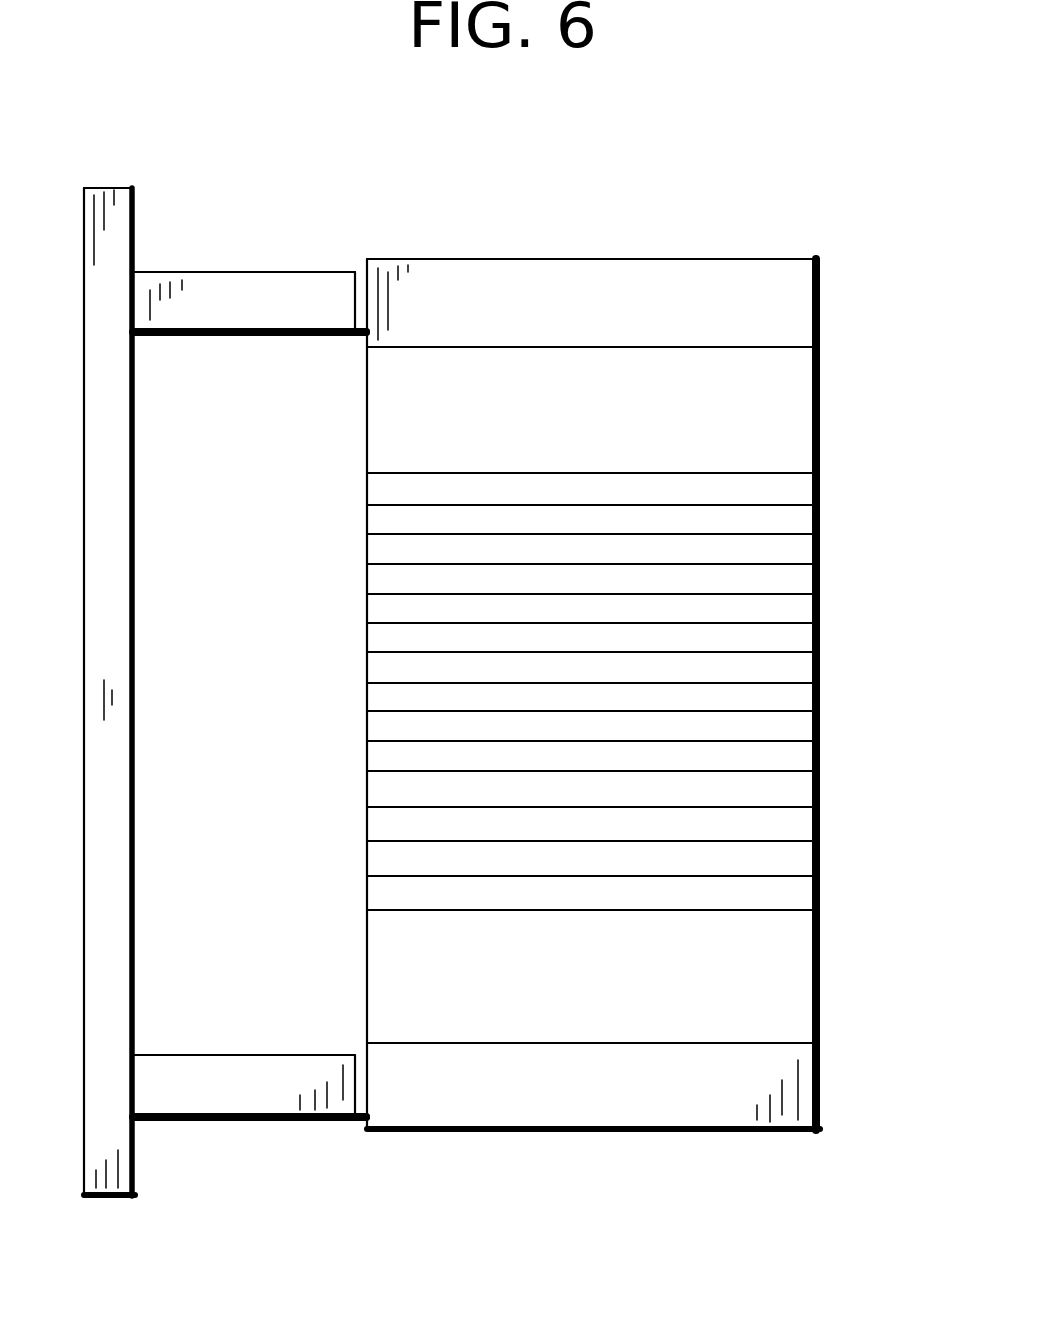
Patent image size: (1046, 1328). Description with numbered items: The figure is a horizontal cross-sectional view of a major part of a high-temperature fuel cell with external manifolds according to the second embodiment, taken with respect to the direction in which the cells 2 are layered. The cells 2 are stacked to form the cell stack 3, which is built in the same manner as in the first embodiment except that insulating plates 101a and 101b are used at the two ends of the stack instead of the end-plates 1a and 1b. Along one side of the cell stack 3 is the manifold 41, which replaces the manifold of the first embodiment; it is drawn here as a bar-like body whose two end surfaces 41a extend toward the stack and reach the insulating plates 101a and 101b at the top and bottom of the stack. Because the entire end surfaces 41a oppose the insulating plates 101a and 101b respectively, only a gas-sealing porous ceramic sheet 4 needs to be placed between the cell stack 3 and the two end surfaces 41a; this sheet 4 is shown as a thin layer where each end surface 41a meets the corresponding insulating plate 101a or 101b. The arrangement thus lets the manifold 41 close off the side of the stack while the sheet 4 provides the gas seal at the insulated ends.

The end-plate 1a is at (591, 437).
The end-plate 1b is at (594, 975).
The cells 2 is at (800, 521).
The cell stack 3 is at (661, 694).
The gas-sealing porous ceramic sheet 4 is at (365, 270).
The manifold 41 is at (317, 303).
The end surfaces 41a is at (356, 338).
The insulating plate 101a is at (591, 306).
The insulating plate 101b is at (591, 1082).